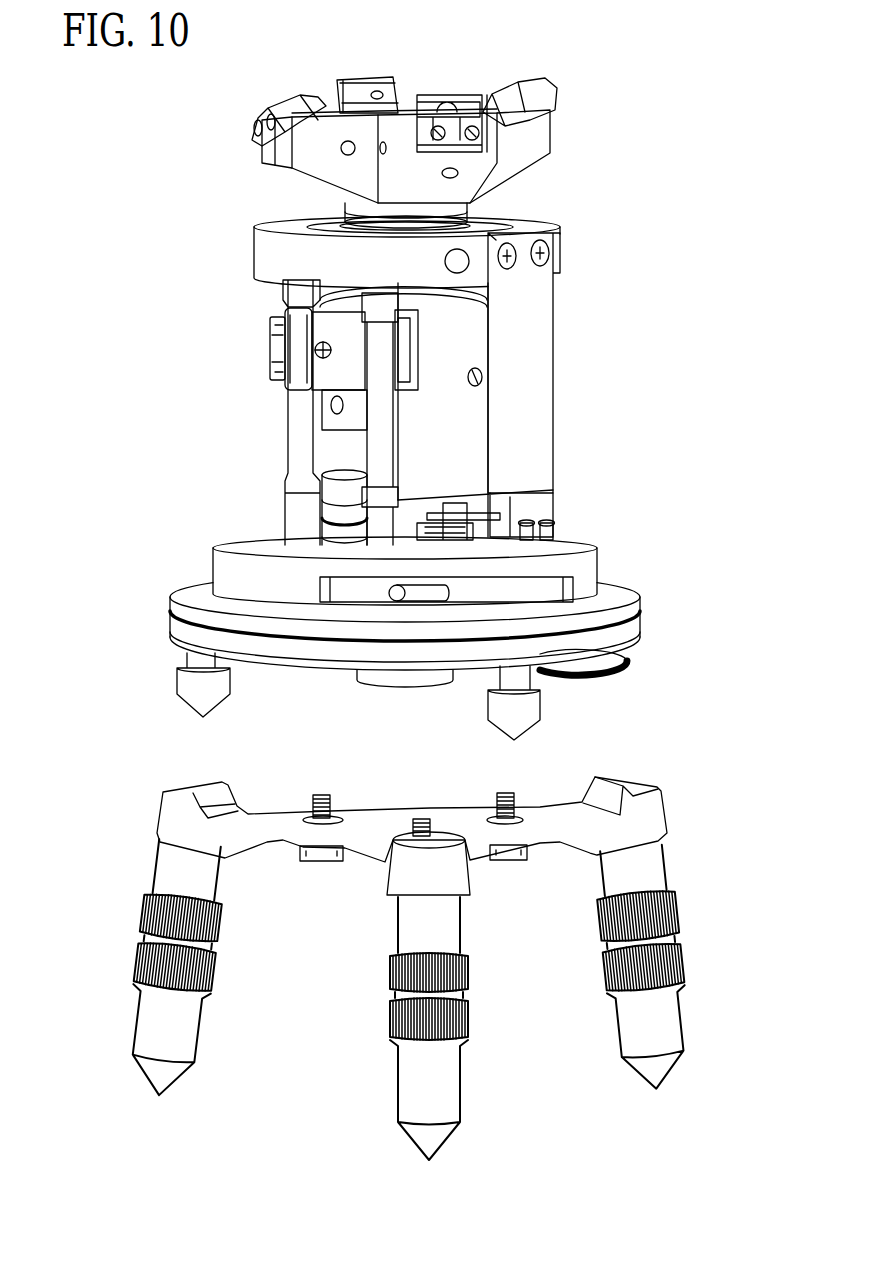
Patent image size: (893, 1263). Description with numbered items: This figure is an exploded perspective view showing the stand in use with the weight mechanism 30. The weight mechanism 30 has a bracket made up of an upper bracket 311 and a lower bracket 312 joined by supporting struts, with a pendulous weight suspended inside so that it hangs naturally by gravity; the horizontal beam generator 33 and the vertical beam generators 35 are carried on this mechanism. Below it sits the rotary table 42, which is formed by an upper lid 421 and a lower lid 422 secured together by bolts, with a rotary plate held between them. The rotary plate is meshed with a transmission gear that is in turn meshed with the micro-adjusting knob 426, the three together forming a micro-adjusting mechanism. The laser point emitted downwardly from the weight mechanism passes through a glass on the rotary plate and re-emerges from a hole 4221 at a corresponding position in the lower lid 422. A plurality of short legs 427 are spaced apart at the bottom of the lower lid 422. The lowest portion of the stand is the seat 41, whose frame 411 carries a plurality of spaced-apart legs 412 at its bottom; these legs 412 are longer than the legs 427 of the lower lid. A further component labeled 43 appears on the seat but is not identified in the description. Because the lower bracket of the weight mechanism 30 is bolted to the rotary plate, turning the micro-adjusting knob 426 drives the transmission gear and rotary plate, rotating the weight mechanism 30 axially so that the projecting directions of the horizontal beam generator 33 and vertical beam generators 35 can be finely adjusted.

The weight mechanism 30 is at (574, 307).
The upper bracket 311 is at (262, 248).
The lower bracket 312 is at (212, 557).
The horizontal beam generator 33 is at (252, 347).
The vertical beam generators 35 is at (443, 80).
The seat 41 is at (457, 961).
The frame 411 is at (658, 812).
The legs 412 is at (196, 1034).
The screw 43 is at (444, 823).
The rotary table 42 is at (468, 643).
The upper lid 421 is at (620, 578).
The lower lid 422 is at (634, 622).
The hole 4221 is at (400, 688).
The micro-adjusting knob 426 is at (626, 663).
The legs 427 is at (228, 688).